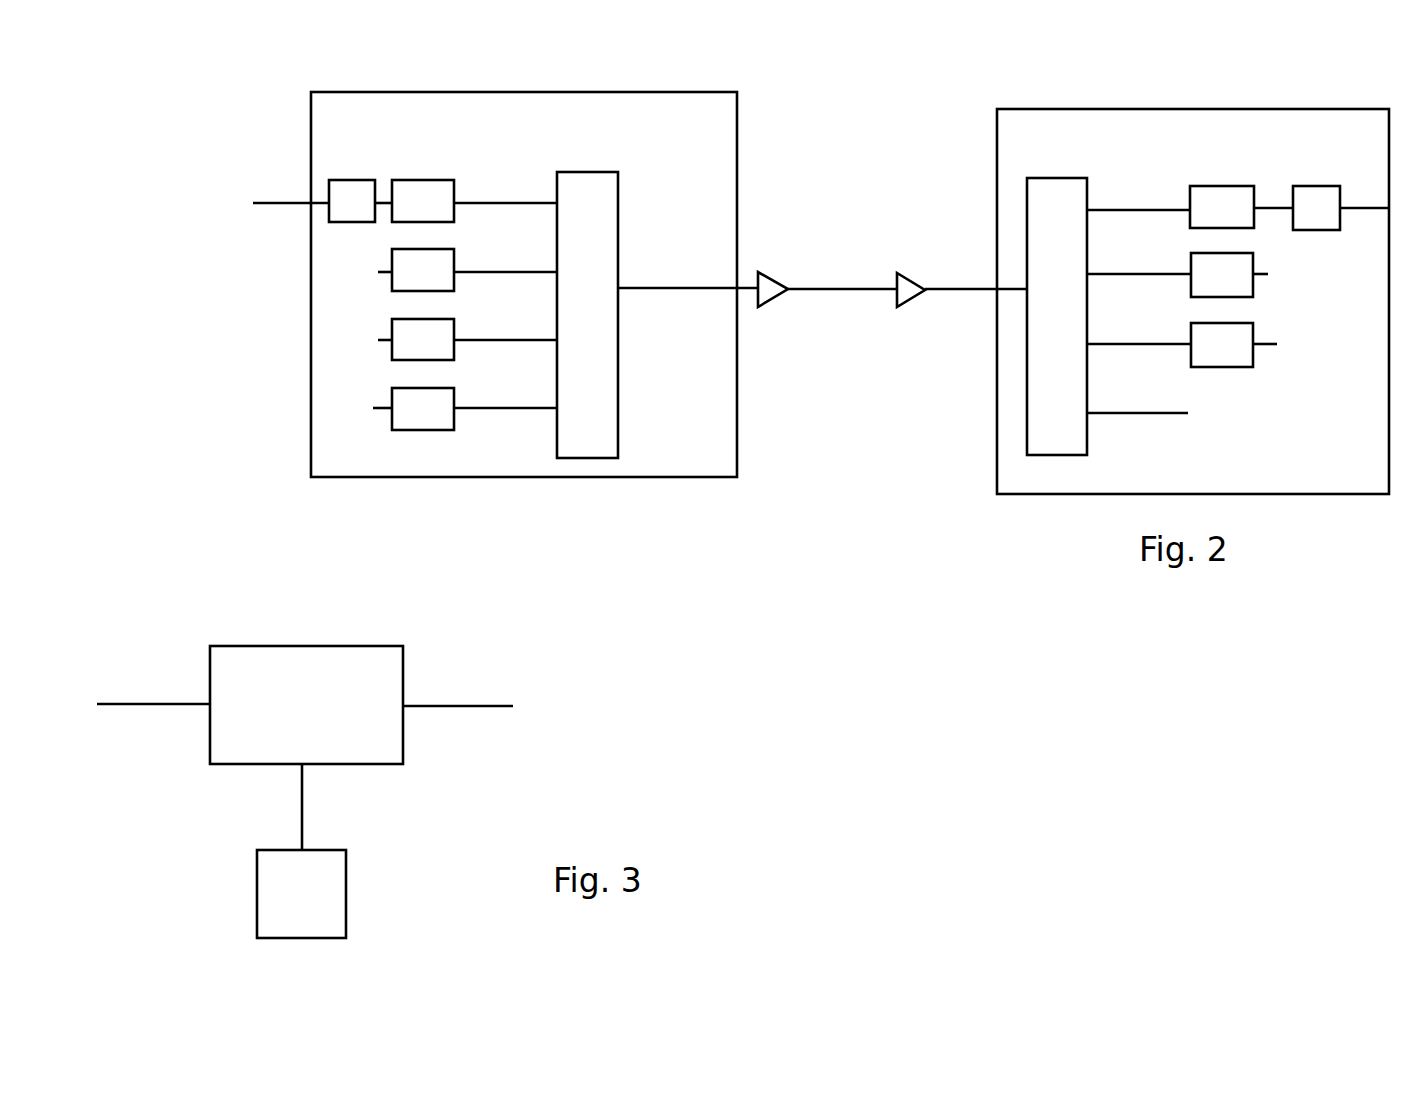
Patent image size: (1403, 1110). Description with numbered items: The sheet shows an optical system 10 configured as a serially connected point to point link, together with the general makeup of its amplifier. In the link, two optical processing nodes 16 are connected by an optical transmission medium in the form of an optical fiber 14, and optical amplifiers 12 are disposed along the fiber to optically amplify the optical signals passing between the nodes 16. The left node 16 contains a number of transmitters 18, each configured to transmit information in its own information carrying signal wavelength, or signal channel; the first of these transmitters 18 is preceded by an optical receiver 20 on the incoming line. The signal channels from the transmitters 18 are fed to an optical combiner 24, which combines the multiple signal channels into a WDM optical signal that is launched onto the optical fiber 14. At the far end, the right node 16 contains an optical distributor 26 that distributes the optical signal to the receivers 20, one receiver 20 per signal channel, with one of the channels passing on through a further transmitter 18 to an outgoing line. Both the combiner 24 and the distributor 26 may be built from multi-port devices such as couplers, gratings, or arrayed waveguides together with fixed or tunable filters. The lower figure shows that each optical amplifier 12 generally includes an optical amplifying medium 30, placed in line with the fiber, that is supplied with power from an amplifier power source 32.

In FIG. 2, the optical system 10 is at (1301, 542).
In FIG. 2, the optical amplifier 12 is at (778, 297).
In FIG. 3, the optical amplifier 12 is at (569, 765).
In FIG. 2, the optical fiber 14 is at (747, 289).
In FIG. 2, the optical processing node 16 is at (492, 92).
In FIG. 2, the transmitter 18 is at (1330, 186).
In FIG. 2, the optical receiver 20 is at (365, 180).
In FIG. 2, the optical combiner 24 is at (593, 172).
In FIG. 2, the optical distributor 26 is at (1047, 178).
In FIG. 3, the optical amplifying medium 30 is at (280, 646).
In FIG. 3, the amplifier power source 32 is at (346, 908).